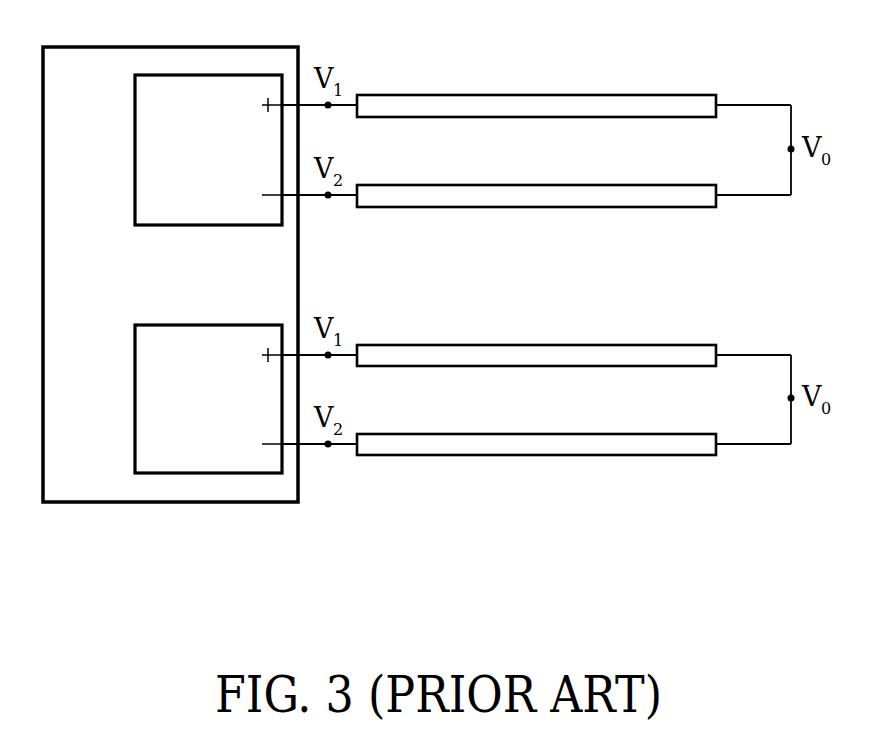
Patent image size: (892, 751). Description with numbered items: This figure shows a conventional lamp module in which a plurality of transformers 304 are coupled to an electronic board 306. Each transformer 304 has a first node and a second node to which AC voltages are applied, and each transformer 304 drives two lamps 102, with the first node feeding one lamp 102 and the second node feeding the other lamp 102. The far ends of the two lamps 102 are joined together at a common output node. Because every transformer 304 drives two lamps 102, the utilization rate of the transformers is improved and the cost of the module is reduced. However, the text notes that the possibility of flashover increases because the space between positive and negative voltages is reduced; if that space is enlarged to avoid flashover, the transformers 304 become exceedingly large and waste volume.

The lamp 102 is at (536, 94).
The transformer 304 is at (234, 161).
The electronic board 306 is at (112, 287).